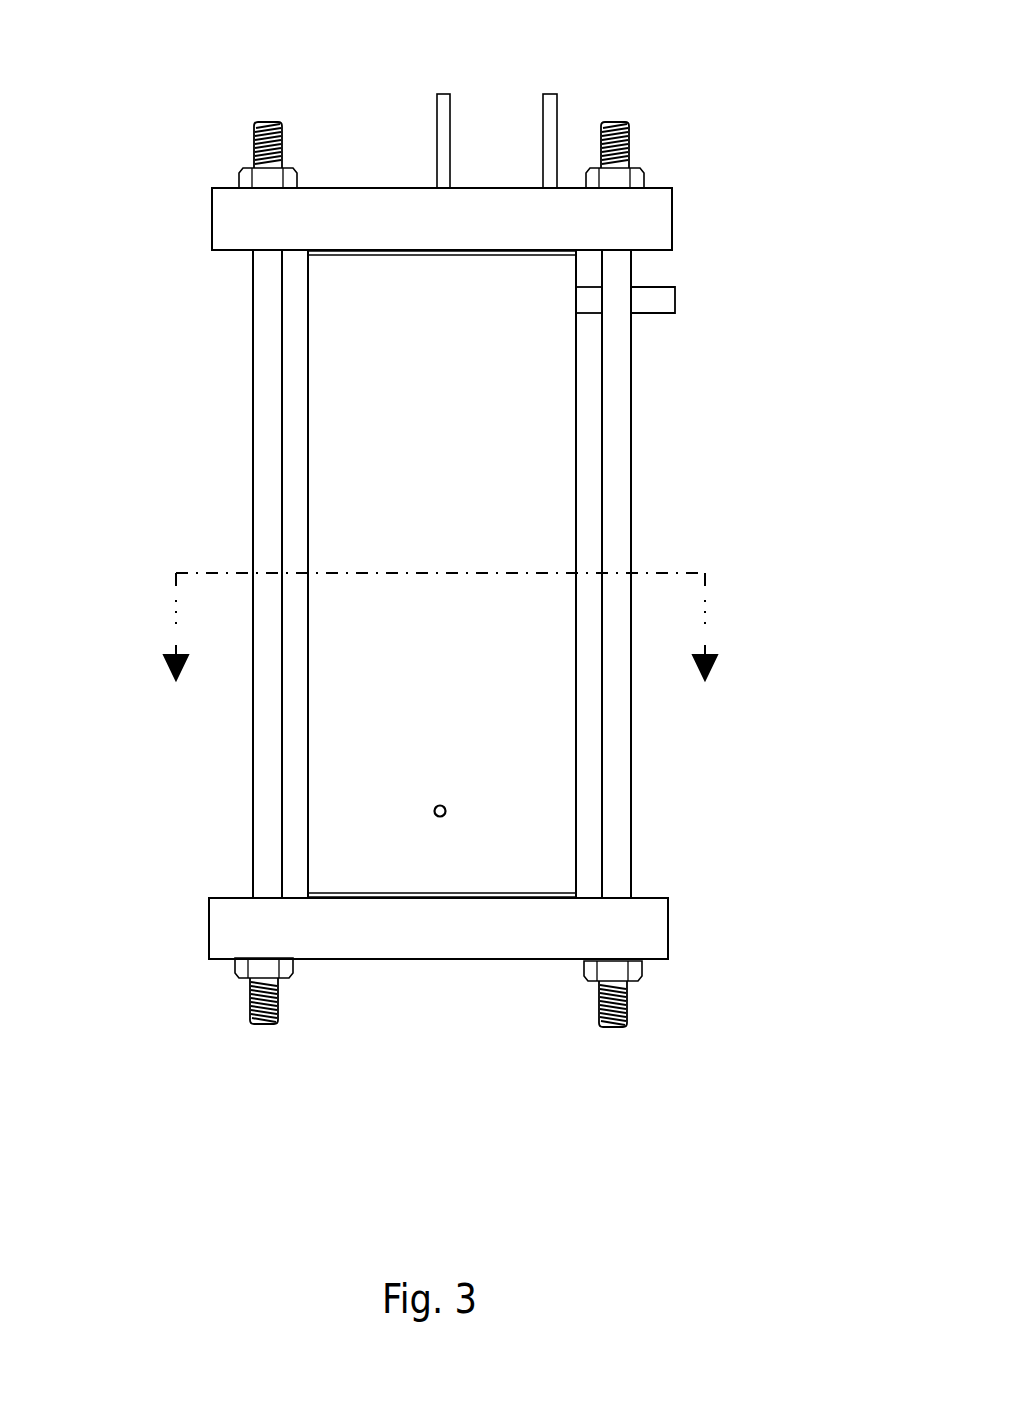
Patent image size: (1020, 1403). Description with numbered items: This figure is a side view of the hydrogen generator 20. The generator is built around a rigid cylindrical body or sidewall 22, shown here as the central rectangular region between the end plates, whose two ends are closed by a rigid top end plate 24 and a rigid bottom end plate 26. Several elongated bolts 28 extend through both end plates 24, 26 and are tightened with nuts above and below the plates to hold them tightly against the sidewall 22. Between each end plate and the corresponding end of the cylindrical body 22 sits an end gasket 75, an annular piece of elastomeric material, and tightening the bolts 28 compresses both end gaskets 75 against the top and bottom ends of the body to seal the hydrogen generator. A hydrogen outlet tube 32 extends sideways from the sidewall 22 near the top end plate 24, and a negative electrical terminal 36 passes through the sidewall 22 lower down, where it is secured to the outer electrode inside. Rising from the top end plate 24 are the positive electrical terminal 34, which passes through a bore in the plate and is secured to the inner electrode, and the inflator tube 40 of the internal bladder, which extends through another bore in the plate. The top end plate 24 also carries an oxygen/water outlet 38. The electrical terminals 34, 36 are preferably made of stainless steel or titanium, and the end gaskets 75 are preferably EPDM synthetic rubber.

The hydrogen generator 20 is at (140, 300).
The sidewall 22 is at (458, 543).
The top end plate 24 is at (672, 221).
The bottom end plate 26 is at (668, 917).
The elongated bolts 28 is at (252, 458).
The hydrogen outlet tube 32 is at (675, 298).
The positive electrical terminal 34 is at (550, 92).
The negative electrical terminal 36 is at (446, 816).
The oxygen/water outlet 38 is at (328, 188).
The inflator tube 40 is at (443, 92).
The end gasket 75 is at (340, 254).